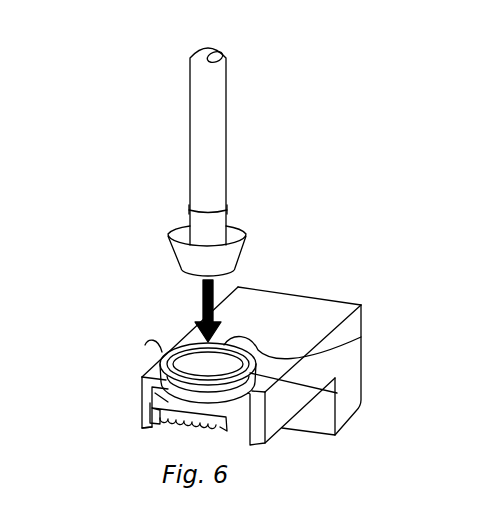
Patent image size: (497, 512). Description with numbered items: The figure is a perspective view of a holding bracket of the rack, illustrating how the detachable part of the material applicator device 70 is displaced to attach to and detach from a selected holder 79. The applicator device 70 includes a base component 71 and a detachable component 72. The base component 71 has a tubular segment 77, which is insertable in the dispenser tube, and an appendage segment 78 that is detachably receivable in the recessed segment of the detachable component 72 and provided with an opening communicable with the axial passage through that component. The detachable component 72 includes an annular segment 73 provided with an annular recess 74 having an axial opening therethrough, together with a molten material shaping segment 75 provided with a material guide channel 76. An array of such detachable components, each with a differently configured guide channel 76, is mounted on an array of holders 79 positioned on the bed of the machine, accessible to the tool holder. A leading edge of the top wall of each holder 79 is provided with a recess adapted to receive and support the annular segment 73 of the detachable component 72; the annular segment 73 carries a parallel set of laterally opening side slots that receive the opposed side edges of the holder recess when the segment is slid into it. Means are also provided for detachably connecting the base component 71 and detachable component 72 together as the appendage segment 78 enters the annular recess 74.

The material applicator device 70 is at (138, 192).
The base component 71 is at (186, 135).
The detachable component 72 is at (146, 345).
The annular segment 73 is at (337, 393).
The annular recess 74 is at (362, 338).
The molten material shaping segment 75 is at (148, 412).
The material guide channel 76 is at (162, 421).
The tubular segment 77 is at (226, 156).
The appendage segment 78 is at (243, 231).
The holder 79 is at (310, 300).